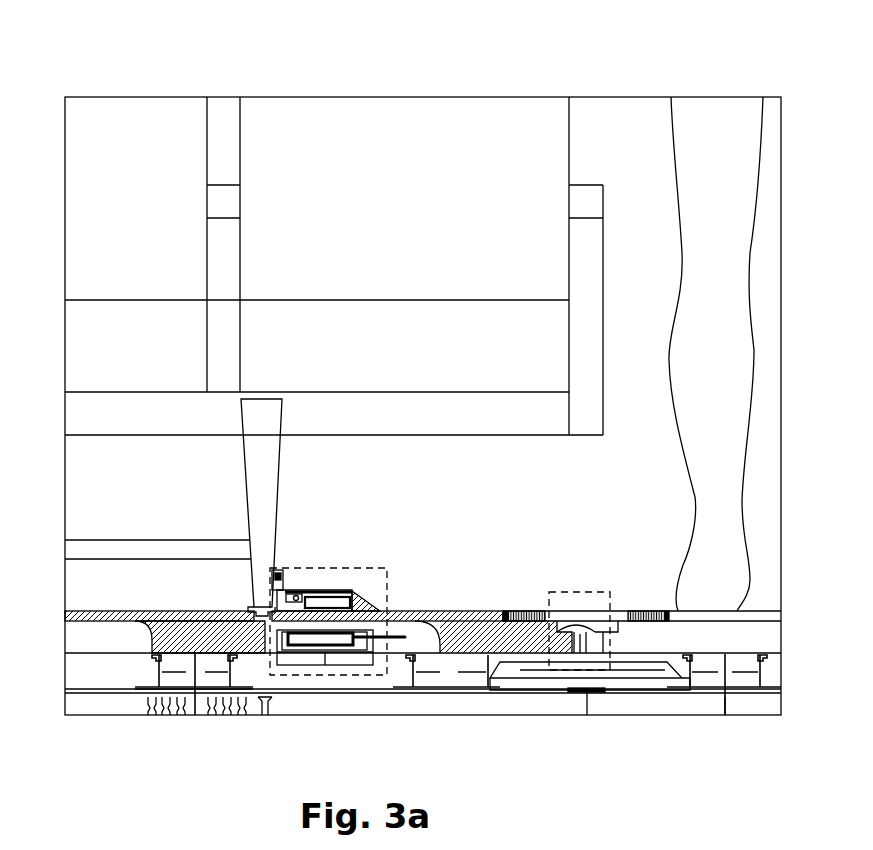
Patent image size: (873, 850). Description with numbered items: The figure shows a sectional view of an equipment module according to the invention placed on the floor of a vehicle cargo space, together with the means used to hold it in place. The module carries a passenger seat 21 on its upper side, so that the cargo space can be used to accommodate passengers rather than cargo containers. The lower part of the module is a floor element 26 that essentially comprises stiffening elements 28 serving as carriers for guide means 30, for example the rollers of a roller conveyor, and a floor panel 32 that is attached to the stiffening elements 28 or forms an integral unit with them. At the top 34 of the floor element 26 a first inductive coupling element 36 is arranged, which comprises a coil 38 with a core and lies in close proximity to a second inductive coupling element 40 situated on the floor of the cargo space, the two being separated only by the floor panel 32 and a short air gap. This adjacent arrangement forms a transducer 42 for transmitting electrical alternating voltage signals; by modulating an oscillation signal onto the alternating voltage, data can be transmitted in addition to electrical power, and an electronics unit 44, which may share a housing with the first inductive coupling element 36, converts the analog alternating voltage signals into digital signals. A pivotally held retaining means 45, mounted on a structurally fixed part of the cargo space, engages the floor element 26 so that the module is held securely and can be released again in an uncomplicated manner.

The passenger seat 21 is at (418, 128).
The floor element 26 is at (130, 605).
The stiffening element 28 is at (195, 612).
The guide means 30 is at (165, 677).
The floor panel 32 is at (85, 611).
The top of the floor element 34 is at (515, 600).
The first inductive coupling element 36 is at (315, 590).
The coil 38 is at (350, 596).
The second inductive coupling element 40 is at (326, 674).
The transducer 42 is at (363, 568).
The electronics unit 44 is at (380, 597).
The retaining means 45 is at (590, 591).